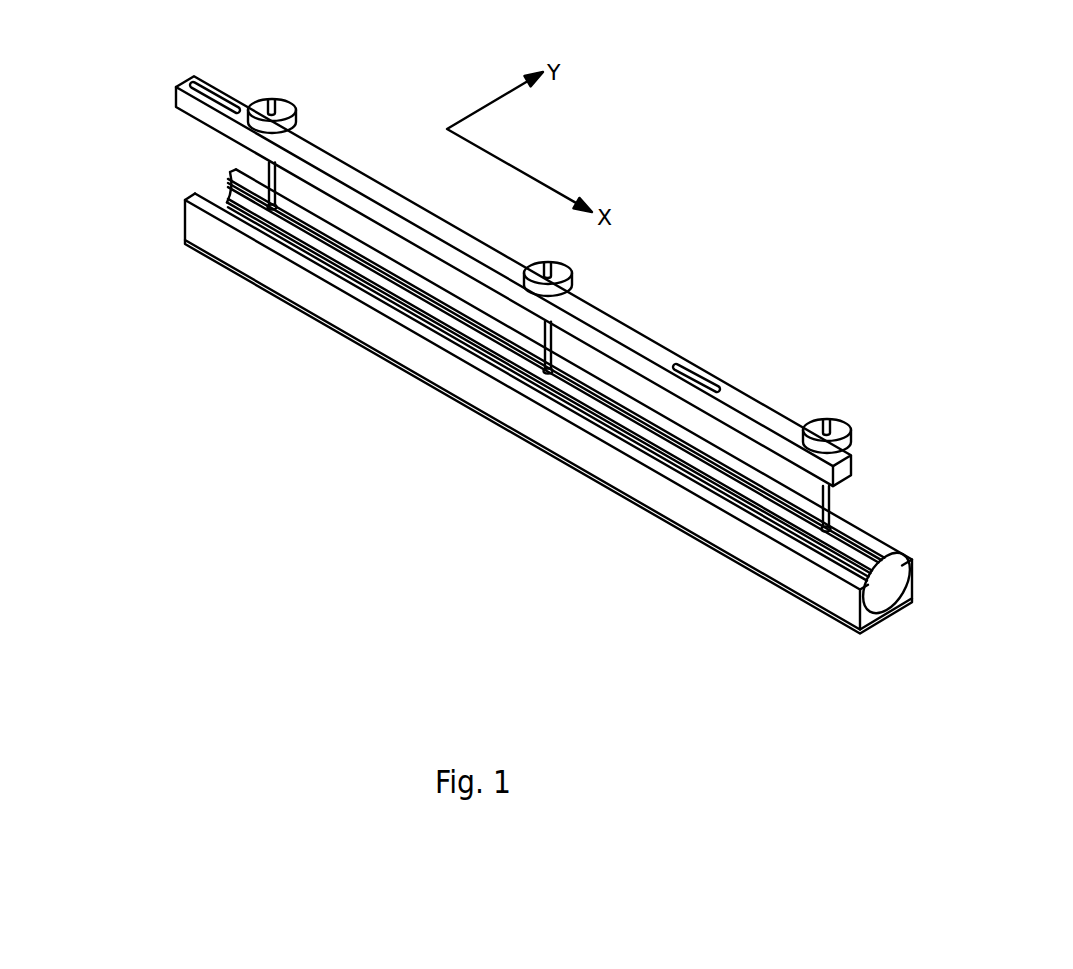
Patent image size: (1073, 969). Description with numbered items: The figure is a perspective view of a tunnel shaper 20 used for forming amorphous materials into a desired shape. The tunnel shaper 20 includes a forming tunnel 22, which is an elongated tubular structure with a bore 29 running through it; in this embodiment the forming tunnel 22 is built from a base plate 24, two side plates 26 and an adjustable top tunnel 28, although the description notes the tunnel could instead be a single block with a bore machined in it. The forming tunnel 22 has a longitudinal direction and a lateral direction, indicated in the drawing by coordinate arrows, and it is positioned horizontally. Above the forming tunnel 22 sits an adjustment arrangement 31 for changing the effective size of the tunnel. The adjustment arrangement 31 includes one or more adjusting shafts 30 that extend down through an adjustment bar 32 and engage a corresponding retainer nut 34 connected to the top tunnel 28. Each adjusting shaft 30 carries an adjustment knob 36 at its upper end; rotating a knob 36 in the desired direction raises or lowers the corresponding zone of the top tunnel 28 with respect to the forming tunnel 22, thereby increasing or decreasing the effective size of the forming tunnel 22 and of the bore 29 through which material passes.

The tunnel shaper 20 is at (706, 197).
The forming tunnel 22 is at (519, 432).
The base plate 24 is at (753, 573).
The side plates 26 is at (622, 475).
The adjustable top tunnel 28 is at (377, 280).
The bore 29 is at (870, 567).
The adjusting shaft 30 is at (546, 353).
The adjustment arrangement 31 is at (878, 492).
The adjustment bar 32 is at (752, 403).
The retainer nut 34 is at (268, 208).
The adjustment knob 36 is at (297, 110).